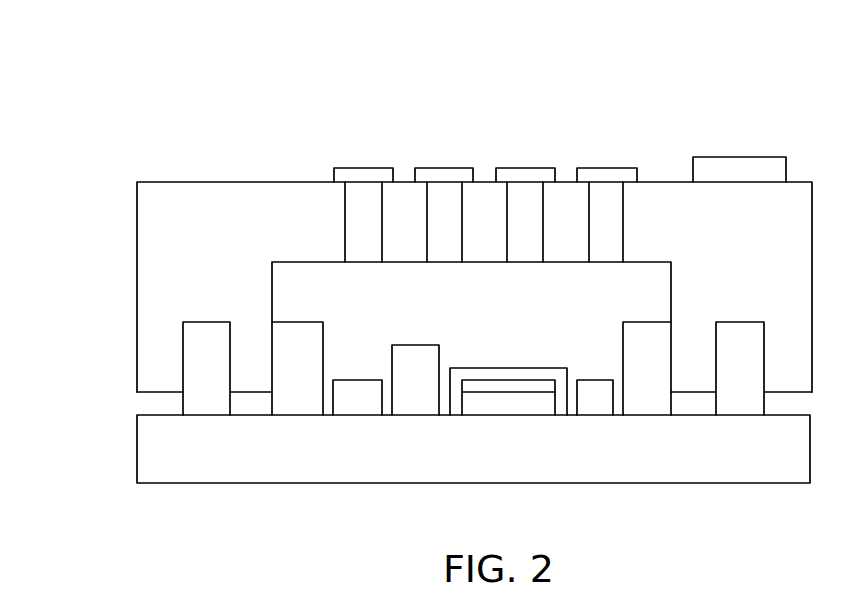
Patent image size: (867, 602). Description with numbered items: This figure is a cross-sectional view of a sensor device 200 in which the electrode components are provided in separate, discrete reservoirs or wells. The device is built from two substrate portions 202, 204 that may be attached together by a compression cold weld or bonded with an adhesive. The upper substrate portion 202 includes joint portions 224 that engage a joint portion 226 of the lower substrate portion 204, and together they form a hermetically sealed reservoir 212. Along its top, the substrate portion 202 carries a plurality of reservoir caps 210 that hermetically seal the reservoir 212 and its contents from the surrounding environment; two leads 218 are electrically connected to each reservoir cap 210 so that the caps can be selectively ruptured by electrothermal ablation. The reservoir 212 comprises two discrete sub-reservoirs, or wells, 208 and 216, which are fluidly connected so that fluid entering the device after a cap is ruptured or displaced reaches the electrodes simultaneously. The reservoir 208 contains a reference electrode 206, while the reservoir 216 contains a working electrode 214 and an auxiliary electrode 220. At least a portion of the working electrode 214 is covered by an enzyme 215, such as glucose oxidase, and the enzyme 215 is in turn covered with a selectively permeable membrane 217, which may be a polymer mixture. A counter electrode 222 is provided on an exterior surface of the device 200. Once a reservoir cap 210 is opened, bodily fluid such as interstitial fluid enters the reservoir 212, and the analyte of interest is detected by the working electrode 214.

The sensor device 200 is at (115, 139).
The substrate portion 202 is at (231, 182).
The substrate portion 204 is at (137, 458).
The reference electrode 206 is at (353, 379).
The reservoir 208 is at (368, 353).
The reservoir caps 210 is at (440, 168).
The reservoir 212 is at (448, 289).
The working electrode 214 is at (511, 407).
The enzyme 215 is at (478, 385).
The selectively permeable membrane 217 is at (530, 369).
The reservoir 216 is at (541, 345).
The leads 218 is at (632, 168).
The auxiliary electrode 220 is at (602, 380).
The counter electrode 222 is at (740, 157).
The joint portions 224 is at (253, 360).
The joint portion 226 is at (183, 378).